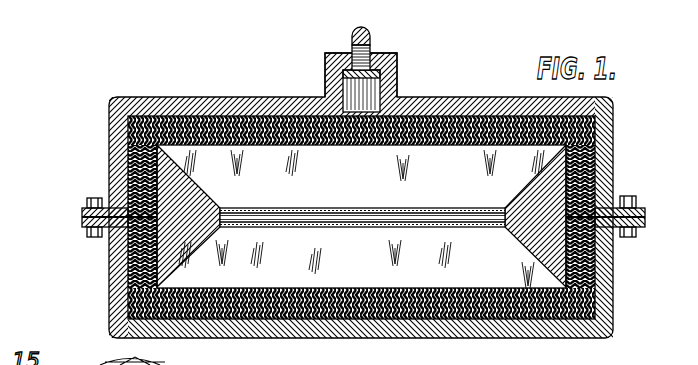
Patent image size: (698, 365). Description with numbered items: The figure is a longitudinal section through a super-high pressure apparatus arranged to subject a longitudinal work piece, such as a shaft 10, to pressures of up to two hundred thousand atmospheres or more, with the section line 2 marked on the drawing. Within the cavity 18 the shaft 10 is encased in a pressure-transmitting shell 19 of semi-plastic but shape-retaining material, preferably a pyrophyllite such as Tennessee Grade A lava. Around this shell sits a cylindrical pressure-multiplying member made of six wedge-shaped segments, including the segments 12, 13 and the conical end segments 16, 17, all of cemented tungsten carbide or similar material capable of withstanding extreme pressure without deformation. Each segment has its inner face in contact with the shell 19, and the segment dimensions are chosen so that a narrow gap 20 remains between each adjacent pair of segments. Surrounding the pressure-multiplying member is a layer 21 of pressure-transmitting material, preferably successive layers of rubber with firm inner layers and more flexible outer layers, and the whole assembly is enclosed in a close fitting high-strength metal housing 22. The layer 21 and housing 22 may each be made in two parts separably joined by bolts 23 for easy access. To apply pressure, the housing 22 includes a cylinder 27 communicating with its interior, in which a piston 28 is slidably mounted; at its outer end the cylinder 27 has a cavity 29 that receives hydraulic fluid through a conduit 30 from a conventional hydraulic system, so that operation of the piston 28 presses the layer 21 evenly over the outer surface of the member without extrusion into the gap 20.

The section line 2- 2 is at (363, 22).
The shaft 10 is at (434, 210).
The wedge-shaped segment 12 is at (362, 182).
The wedge-shaped segment 13 is at (362, 260).
The end segment 16 is at (147, 256).
The end segment 17 is at (615, 152).
The cavity 18 is at (279, 209).
The pressure-transmitting shell 19 is at (315, 226).
The gap 20 is at (197, 189).
The layer of pressure-transmitting material 21 is at (281, 310).
The metal housing 22 is at (469, 99).
The bolts 23 is at (92, 197).
The cylinder 27 is at (325, 75).
The piston 28 is at (376, 97).
The cavity 29 is at (345, 74).
The conduit 30 is at (352, 47).